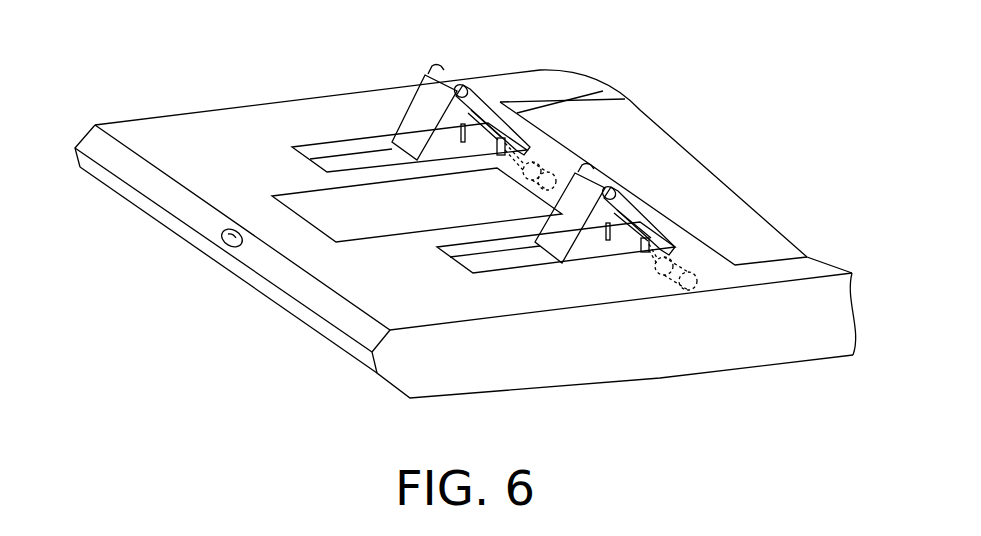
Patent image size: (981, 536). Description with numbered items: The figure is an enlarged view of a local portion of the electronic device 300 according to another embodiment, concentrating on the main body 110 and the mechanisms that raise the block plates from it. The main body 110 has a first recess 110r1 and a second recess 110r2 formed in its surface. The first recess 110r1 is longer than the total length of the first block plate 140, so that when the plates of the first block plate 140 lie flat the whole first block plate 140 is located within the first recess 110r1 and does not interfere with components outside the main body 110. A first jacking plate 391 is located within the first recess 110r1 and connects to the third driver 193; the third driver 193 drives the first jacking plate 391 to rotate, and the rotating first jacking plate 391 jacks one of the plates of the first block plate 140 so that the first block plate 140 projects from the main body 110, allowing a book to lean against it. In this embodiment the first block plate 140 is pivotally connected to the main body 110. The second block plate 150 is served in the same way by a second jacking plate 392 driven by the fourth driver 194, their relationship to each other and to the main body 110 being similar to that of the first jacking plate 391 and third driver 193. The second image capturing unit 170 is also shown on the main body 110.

The electronic device 300 is at (118, 62).
The main body 110 is at (717, 332).
The first recess 110r1 is at (494, 265).
The second recess 110r2 is at (357, 160).
The first block plate 140 is at (562, 238).
The second block plate 150 is at (422, 117).
The second image capturing unit 170 is at (226, 231).
The third driver 193 is at (666, 288).
The fourth driver 194 is at (538, 162).
The first jacking plate 391 is at (600, 247).
The second jacking plate 392 is at (495, 106).